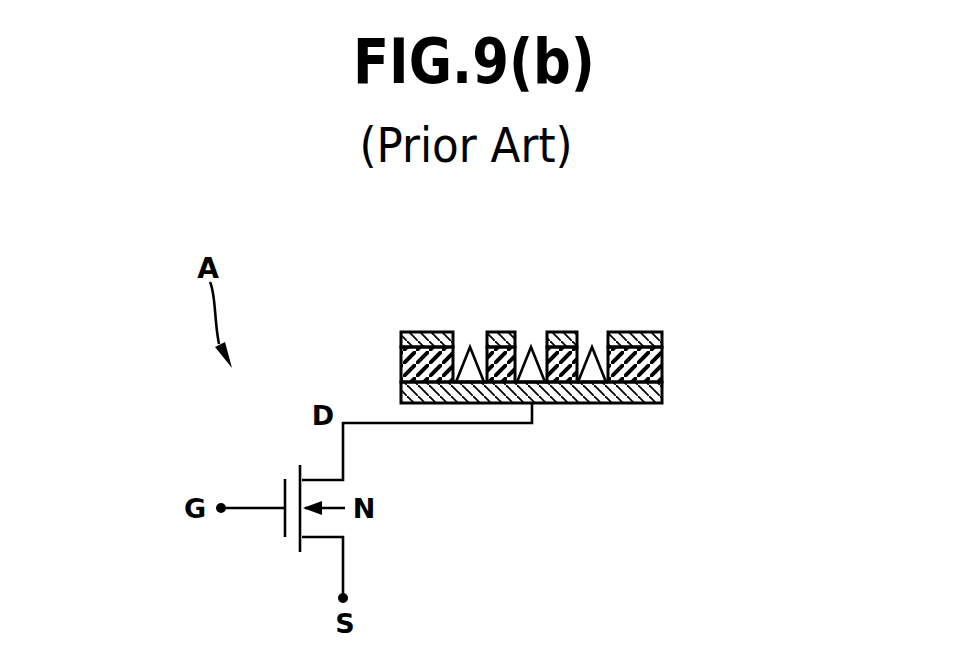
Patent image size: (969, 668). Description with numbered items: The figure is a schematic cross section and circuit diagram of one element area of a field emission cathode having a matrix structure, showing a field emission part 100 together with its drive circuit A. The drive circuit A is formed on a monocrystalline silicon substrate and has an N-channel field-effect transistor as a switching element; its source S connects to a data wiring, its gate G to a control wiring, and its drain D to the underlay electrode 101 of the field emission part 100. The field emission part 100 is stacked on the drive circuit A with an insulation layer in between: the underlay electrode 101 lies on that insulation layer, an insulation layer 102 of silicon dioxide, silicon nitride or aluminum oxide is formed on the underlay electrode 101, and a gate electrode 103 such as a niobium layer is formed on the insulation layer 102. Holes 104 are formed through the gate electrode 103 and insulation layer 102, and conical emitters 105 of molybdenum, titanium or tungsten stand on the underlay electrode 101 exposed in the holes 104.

The field emission part 100 is at (689, 253).
The underlay electrode 101 is at (662, 393).
The insulation layer 102 is at (662, 363).
The gate electrode 103 is at (662, 334).
The holes 104 is at (587, 340).
The conical emitters 105 is at (463, 340).